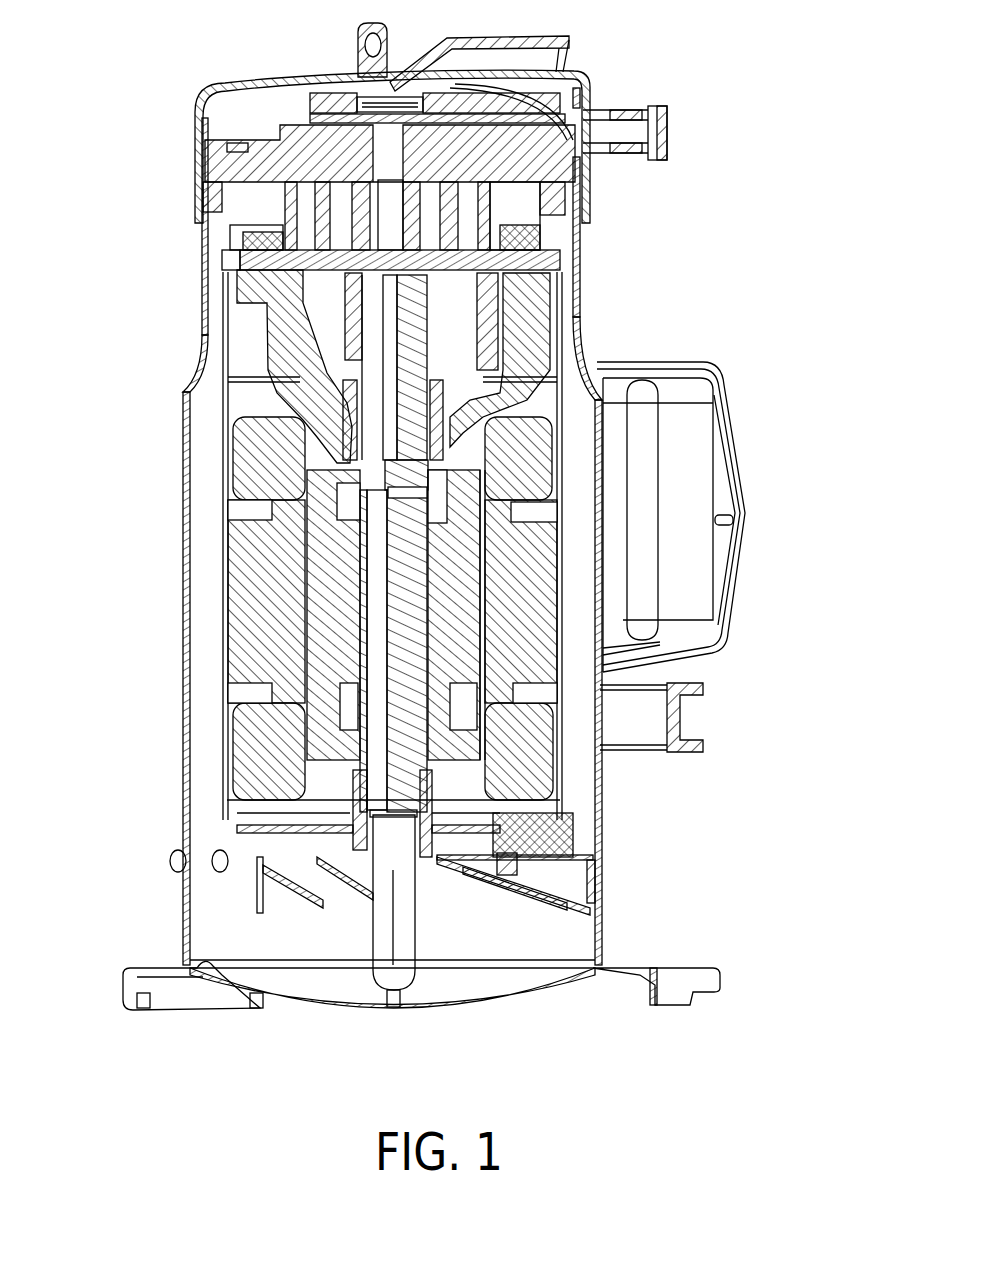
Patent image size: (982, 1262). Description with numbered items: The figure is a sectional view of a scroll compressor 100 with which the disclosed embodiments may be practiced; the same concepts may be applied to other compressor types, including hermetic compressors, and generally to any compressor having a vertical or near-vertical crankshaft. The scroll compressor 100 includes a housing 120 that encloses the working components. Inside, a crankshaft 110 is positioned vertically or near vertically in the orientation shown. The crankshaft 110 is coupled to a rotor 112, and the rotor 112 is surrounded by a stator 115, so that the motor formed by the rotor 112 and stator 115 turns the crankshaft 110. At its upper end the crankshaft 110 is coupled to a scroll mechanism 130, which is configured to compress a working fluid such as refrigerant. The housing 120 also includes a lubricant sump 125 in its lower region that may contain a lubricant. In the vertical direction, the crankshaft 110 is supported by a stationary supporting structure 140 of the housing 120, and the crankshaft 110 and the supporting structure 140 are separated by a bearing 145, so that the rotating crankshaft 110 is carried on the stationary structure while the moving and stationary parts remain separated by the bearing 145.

The scroll compressor 100 is at (660, 58).
The crankshaft 110 is at (405, 675).
The rotor 112 is at (453, 573).
The stator 115 is at (518, 453).
The housing 120 is at (583, 272).
The lubricant sump 125 is at (228, 935).
The scroll mechanism 130 is at (450, 210).
The supporting structure 140 is at (500, 813).
The bearing 145 is at (450, 870).